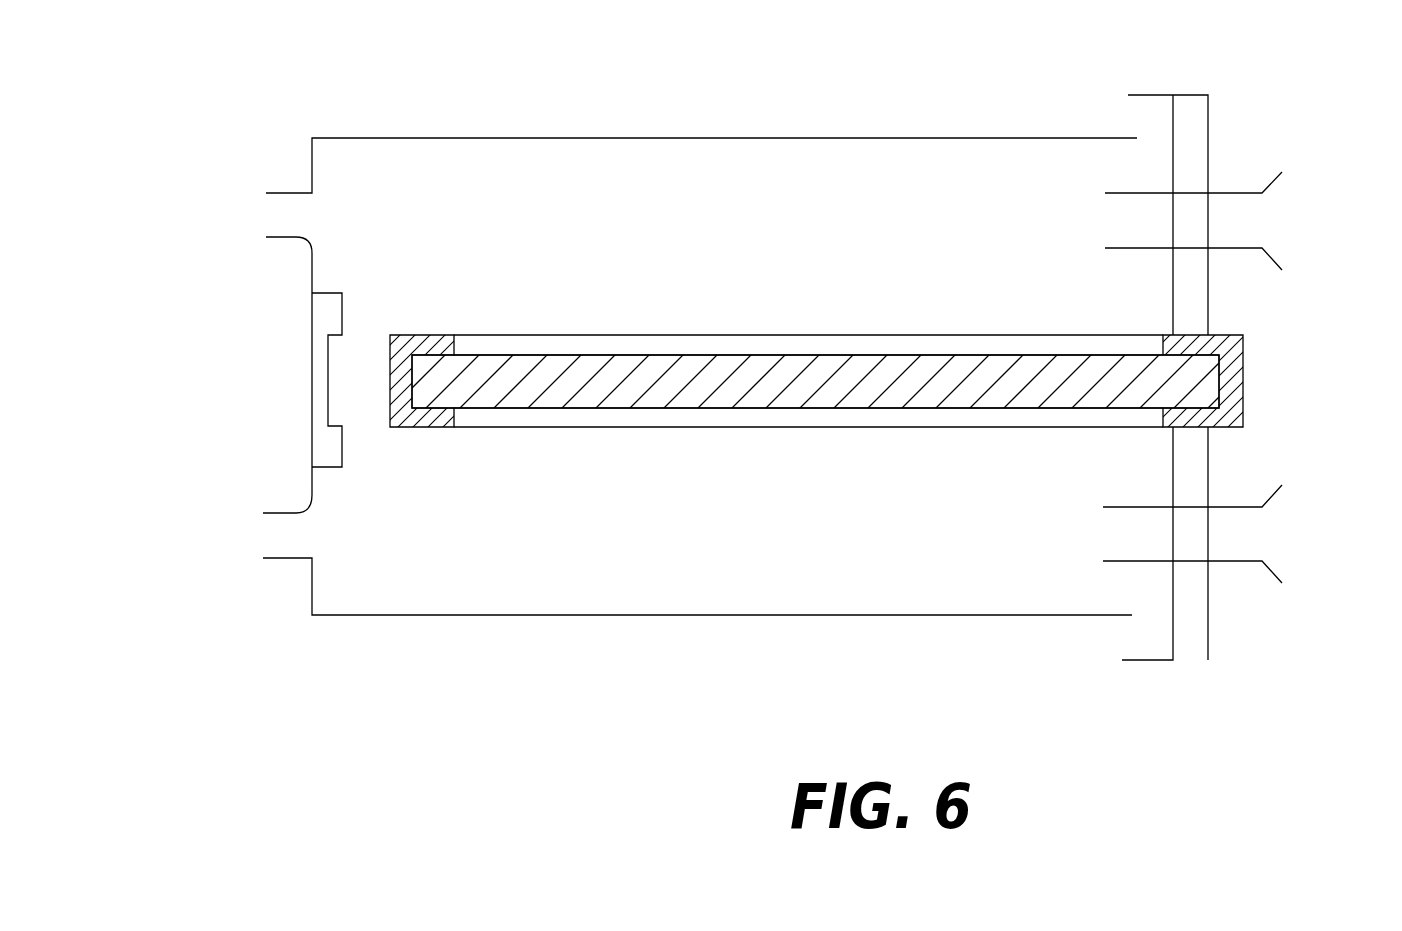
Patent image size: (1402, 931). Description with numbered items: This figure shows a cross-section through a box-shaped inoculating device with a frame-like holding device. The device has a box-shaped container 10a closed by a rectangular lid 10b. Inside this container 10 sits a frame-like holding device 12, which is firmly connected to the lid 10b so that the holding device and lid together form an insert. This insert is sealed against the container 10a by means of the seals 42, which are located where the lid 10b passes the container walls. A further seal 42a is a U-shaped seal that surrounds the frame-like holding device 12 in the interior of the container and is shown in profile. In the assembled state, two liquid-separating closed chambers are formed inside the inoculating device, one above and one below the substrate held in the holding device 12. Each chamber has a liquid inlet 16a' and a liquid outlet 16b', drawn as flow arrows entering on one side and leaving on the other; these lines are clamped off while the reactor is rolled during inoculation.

The container 10 is at (528, 691).
The box-shaped container 10a is at (750, 138).
The rectangular lid 10b is at (1209, 147).
The frame-like holding device 12 is at (586, 347).
The seals 42 is at (1187, 161).
The U-shaped seal 42a is at (333, 308).
The liquid inlet 16a' is at (1324, 375).
The liquid outlet 16b' is at (200, 377).